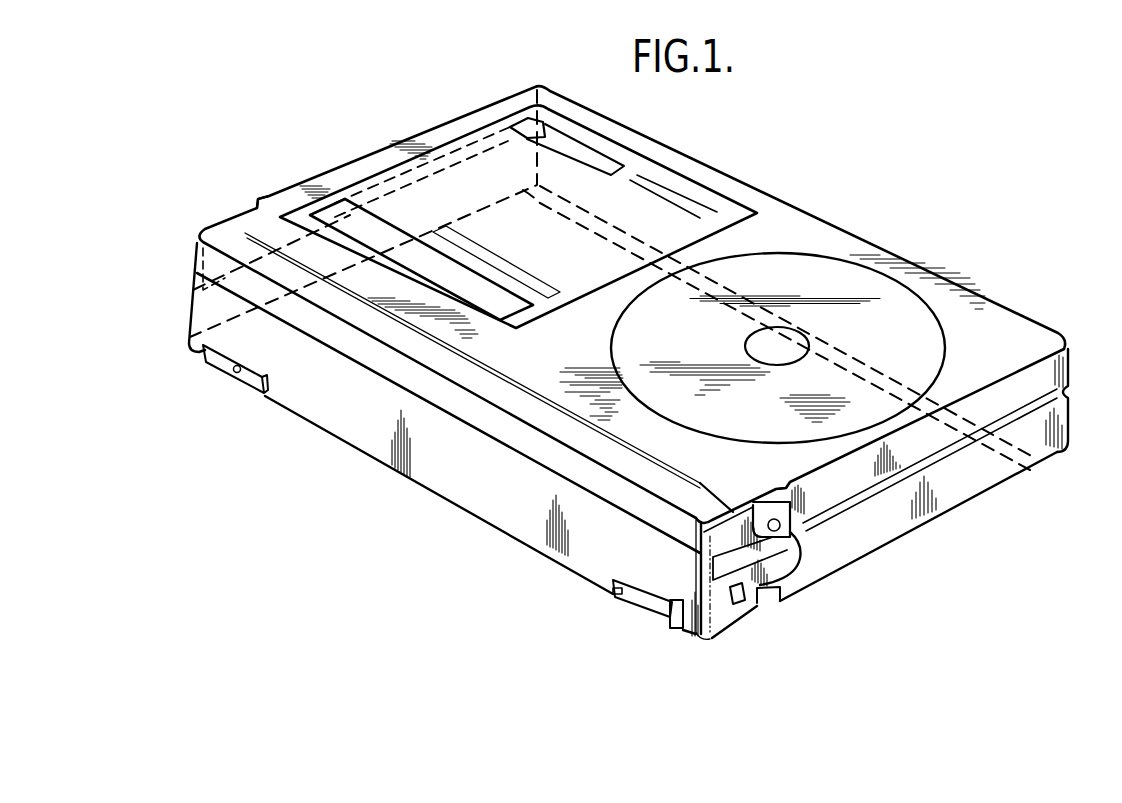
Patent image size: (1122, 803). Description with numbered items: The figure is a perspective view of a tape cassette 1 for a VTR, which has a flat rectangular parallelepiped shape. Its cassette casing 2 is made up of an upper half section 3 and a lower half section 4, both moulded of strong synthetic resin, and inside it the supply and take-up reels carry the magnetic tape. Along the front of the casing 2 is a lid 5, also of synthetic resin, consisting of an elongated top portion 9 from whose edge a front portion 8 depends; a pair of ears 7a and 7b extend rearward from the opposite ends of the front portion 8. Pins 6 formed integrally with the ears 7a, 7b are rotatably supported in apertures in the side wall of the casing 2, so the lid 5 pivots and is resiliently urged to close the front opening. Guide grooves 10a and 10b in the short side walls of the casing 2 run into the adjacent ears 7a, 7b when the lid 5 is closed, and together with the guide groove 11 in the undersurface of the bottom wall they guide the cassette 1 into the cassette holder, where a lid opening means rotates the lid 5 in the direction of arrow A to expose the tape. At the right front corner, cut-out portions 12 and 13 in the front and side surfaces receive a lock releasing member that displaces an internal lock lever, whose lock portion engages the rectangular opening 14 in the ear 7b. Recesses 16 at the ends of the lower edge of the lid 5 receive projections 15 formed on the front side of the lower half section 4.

The tape cassette 1 is at (812, 174).
The cassette casing 2 is at (1002, 296).
The upper half section 3 is at (1047, 367).
The lower half section 4 is at (1063, 408).
The lid 5 is at (466, 496).
The pins 6 is at (800, 540).
The ear 7a is at (253, 207).
The ear 7b is at (764, 488).
The front portion 8 is at (360, 437).
The top portion 9 is at (637, 468).
The guide groove 10a is at (385, 196).
The guide groove 10b is at (1000, 438).
The guide groove 11 is at (620, 252).
The cut-out portion 12 is at (677, 623).
The cut-out portion 13 is at (762, 604).
The rectangular opening 14 is at (738, 604).
The projections 15 is at (250, 383).
The recesses 16 is at (241, 368).
The arrow (lid opening direction) A is at (500, 352).